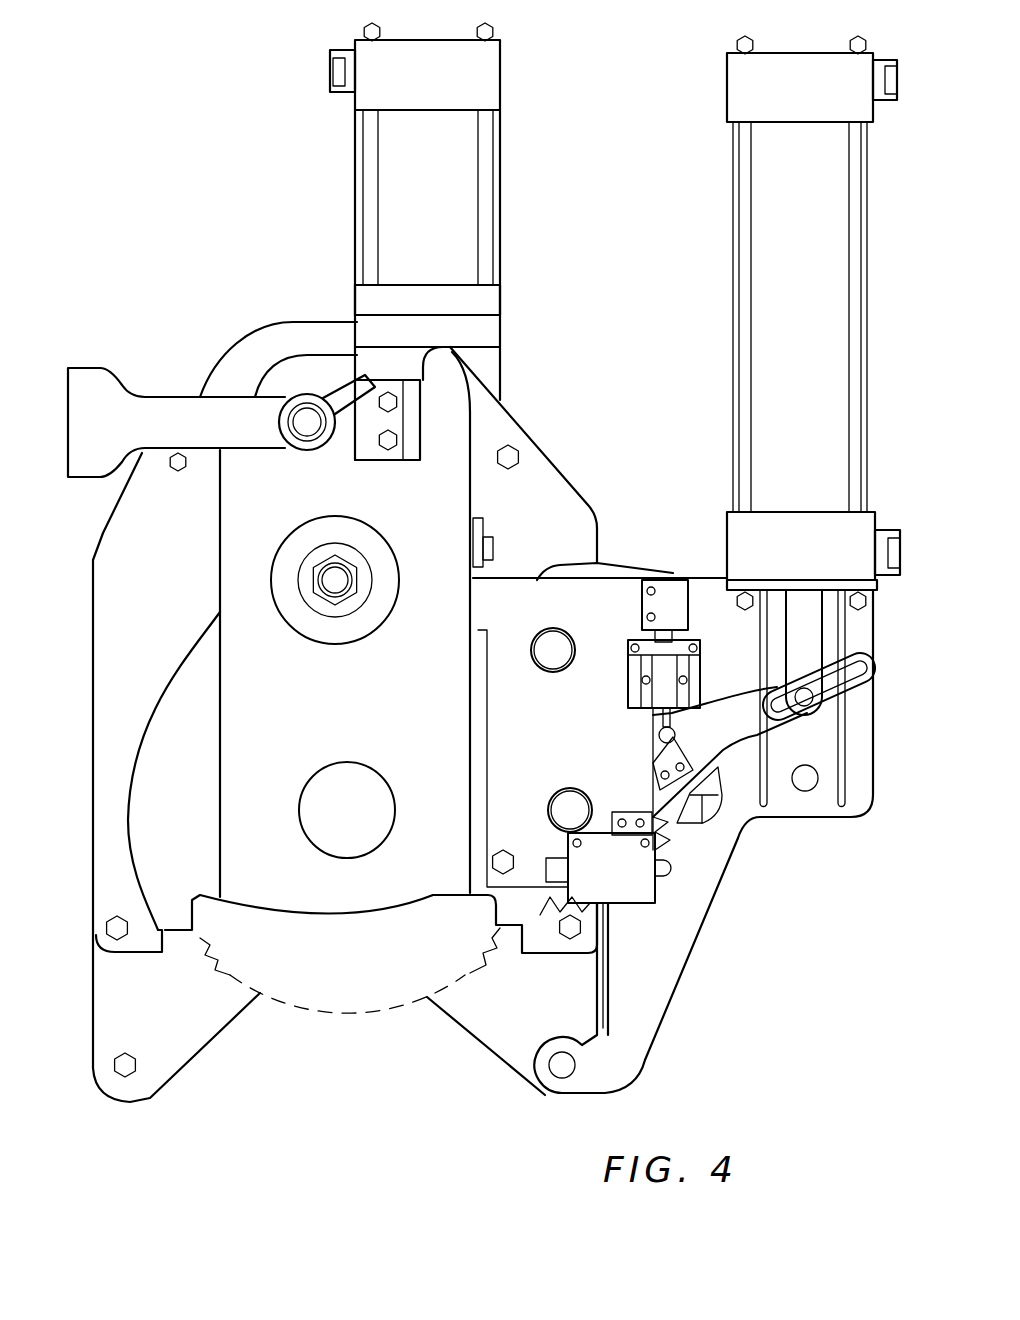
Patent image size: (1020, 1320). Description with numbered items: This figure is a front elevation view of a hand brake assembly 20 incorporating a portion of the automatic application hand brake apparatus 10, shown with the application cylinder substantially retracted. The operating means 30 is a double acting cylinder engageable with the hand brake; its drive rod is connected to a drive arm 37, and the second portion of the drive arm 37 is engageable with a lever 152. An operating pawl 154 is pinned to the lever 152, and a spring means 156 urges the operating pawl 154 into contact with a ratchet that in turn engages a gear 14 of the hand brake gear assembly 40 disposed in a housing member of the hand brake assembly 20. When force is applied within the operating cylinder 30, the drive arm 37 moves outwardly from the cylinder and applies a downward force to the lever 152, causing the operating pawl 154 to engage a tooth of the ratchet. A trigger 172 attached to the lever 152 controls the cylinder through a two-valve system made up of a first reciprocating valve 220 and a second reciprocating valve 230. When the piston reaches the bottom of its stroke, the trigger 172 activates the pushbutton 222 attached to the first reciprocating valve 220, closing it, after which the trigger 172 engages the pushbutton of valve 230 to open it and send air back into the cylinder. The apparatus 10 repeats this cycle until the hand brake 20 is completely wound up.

The apparatus 10 is at (626, 148).
The hand brake assembly 20 is at (207, 328).
The operating means 30 is at (718, 356).
The drive arm 37 is at (795, 632).
The lever 152 is at (862, 690).
The spring means 156 is at (722, 782).
The trigger 172 is at (659, 741).
The second reciprocating valve 230 is at (657, 583).
The operating pawl 154 is at (704, 816).
The first reciprocating valve 220 is at (637, 885).
The pushbutton 222 is at (672, 868).
The gear 14 is at (220, 957).
The hand brake gear assembly 40 is at (352, 1034).